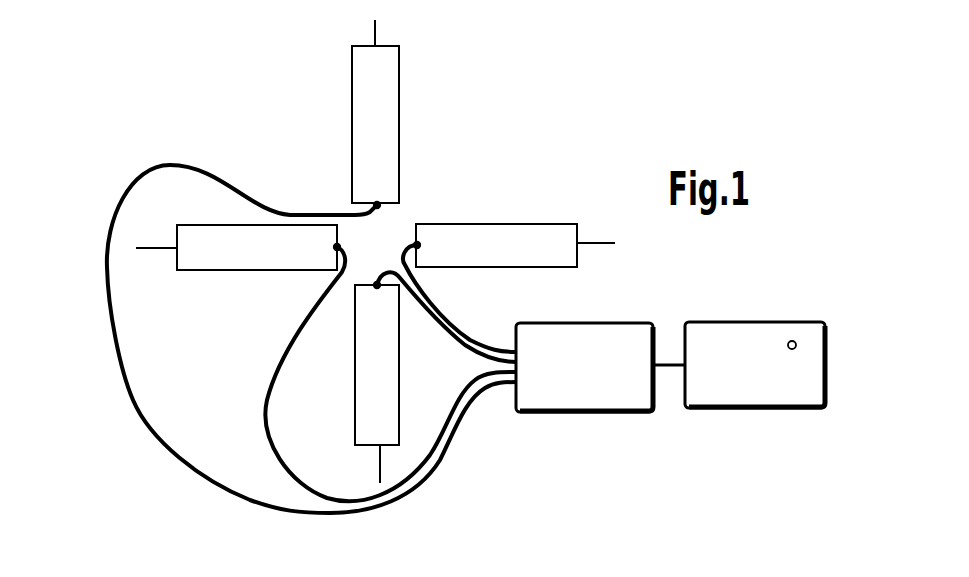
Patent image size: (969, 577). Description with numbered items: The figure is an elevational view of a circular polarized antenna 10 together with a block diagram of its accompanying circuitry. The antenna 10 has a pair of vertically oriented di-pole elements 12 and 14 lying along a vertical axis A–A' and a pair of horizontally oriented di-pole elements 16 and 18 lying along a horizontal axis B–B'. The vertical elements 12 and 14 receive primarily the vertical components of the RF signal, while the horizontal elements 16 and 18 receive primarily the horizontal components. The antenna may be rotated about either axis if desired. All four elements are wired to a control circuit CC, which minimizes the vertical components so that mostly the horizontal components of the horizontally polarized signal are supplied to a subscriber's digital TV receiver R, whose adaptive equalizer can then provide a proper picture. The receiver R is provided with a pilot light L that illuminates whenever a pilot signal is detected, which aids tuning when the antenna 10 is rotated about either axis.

The circular polarized antenna 10 is at (513, 125).
The vertically oriented di-pole element 12 is at (382, 118).
The vertically oriented di-pole element 14 is at (353, 362).
The horizontally oriented di-pole element 16 is at (218, 253).
The horizontally oriented di-pole element 18 is at (508, 238).
The control circuit CC is at (588, 395).
The digital TV receiver R is at (702, 333).
The pilot light L is at (797, 338).